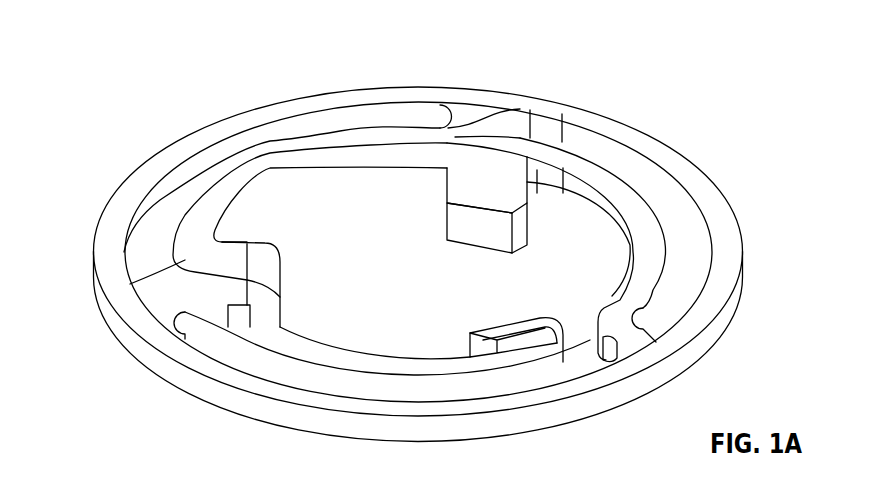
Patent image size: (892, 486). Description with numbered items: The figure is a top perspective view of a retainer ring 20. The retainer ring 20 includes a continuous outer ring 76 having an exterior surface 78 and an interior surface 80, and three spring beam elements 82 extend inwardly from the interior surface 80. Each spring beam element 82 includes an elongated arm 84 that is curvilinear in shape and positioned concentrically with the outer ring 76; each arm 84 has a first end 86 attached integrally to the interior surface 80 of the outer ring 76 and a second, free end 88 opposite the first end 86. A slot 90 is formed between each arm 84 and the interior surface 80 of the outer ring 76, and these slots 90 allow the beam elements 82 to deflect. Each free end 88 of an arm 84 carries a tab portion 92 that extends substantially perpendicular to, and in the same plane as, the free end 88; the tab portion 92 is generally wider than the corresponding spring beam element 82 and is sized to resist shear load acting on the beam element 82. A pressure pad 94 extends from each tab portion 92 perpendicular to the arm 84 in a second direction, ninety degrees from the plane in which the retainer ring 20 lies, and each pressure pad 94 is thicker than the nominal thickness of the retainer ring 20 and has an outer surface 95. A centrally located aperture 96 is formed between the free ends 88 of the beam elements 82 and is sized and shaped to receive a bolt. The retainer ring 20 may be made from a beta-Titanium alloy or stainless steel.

The retainer ring 20 is at (146, 68).
The outer ring 76 is at (597, 120).
The exterior surface 78 is at (590, 410).
The interior surface 80 is at (702, 282).
The spring beam element 82 is at (216, 198).
The elongated arm 84 is at (263, 167).
The first end 86 is at (448, 127).
The free end 88 is at (262, 252).
The slot 90 is at (159, 229).
The tab portion 92 is at (528, 157).
The pressure pad 94 is at (483, 222).
The outer surface 95 is at (530, 226).
The aperture 96 is at (373, 206).